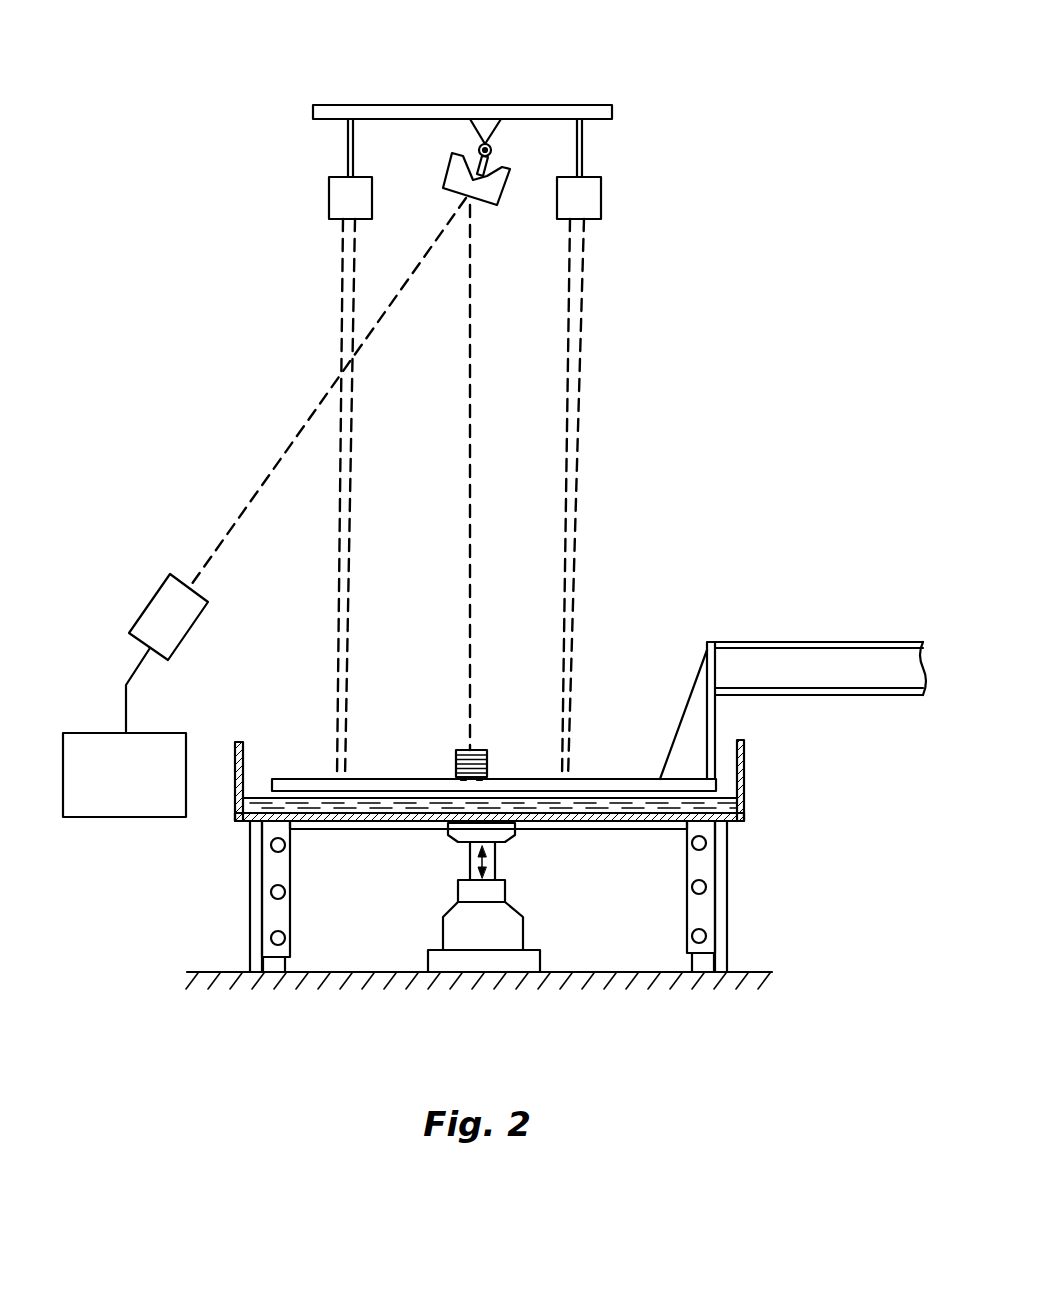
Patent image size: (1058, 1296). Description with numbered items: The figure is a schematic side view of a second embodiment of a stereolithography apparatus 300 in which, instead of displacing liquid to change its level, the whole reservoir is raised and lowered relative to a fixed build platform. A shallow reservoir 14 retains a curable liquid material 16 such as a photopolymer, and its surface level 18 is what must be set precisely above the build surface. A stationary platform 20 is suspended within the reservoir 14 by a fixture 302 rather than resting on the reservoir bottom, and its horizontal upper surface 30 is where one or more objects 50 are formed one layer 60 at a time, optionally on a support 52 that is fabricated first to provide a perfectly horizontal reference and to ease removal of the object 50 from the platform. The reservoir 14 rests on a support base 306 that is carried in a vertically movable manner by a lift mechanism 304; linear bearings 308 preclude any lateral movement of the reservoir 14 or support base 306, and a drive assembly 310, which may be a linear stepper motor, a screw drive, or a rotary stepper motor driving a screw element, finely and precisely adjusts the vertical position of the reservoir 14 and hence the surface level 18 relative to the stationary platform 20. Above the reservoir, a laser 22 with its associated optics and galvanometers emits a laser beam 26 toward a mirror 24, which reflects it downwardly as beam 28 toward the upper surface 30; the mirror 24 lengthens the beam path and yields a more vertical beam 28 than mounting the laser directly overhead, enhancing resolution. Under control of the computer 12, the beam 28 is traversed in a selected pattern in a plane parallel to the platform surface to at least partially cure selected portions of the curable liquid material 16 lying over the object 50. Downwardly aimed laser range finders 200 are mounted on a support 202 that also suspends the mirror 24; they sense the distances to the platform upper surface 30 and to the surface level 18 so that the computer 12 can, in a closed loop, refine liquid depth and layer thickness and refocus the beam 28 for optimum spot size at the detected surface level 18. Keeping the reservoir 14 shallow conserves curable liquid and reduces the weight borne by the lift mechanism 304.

The computer 12 is at (78, 808).
The reservoir 14 is at (235, 800).
The curable liquid material 16 is at (725, 807).
The surface level 18 is at (725, 795).
The stationary platform 20 is at (685, 783).
The laser 22 is at (172, 638).
The mirror 24 is at (488, 200).
The laser beam 26 is at (301, 427).
The beam 28 is at (468, 409).
The upper surface 30 is at (628, 778).
The object 50 is at (477, 753).
The support 52 is at (458, 775).
The layer 60 is at (487, 760).
The laser range finder 200 is at (338, 193).
The support 202 is at (545, 110).
The apparatus 300 is at (692, 383).
The fixture 302 is at (822, 625).
The lift mechanism 304 is at (274, 1026).
The support base 306 is at (640, 826).
The linear bearings 308 is at (270, 912).
The drive assembly 310 is at (510, 930).